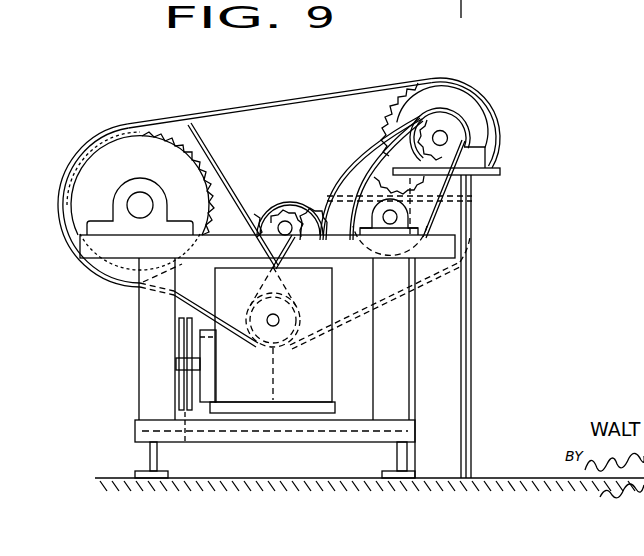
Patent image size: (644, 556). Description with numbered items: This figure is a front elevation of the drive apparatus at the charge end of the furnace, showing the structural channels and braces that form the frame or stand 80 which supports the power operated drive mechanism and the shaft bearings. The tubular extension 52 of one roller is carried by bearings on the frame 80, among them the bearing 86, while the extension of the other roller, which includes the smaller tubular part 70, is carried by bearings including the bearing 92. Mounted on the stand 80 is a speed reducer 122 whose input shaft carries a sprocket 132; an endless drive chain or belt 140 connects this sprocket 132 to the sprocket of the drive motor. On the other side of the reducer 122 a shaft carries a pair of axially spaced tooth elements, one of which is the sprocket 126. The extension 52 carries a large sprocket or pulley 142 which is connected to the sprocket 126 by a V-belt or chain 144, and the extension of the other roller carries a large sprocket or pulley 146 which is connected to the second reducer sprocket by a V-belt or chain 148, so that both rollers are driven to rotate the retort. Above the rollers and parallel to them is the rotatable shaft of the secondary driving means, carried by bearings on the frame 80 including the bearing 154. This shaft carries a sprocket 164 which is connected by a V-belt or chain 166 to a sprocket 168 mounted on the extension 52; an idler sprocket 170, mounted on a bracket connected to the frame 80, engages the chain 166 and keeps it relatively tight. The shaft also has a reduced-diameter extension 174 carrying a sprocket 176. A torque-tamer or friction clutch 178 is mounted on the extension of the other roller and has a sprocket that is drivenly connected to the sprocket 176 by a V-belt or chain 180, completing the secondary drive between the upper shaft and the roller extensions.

The tubular extension 52 is at (138, 206).
The tubular part 70 is at (410, 213).
The frame or stand 80 is at (138, 376).
The bearing 86 is at (117, 190).
The bearing 92 is at (418, 226).
The speed reducer 122 is at (316, 373).
The sprocket 126 is at (287, 292).
The sprocket 132 is at (179, 335).
The endless drive chain or belt 140 is at (185, 412).
The large sprocket or pulley 142 is at (138, 289).
The V-belt or chain 144 is at (193, 297).
The large sprocket or pulley 146 is at (413, 303).
The V-belt or chain 148 is at (330, 188).
The bearing 154 is at (497, 148).
The sprocket 164 is at (387, 117).
The V-belt or chain 166 is at (303, 102).
The sprocket 168 is at (192, 140).
The idler sprocket 170 is at (257, 228).
The extension 174 is at (448, 138).
The sprocket 176 is at (420, 141).
The torque-tamer or friction clutch 178 is at (445, 176).
The V-belt or chain 180 is at (376, 172).